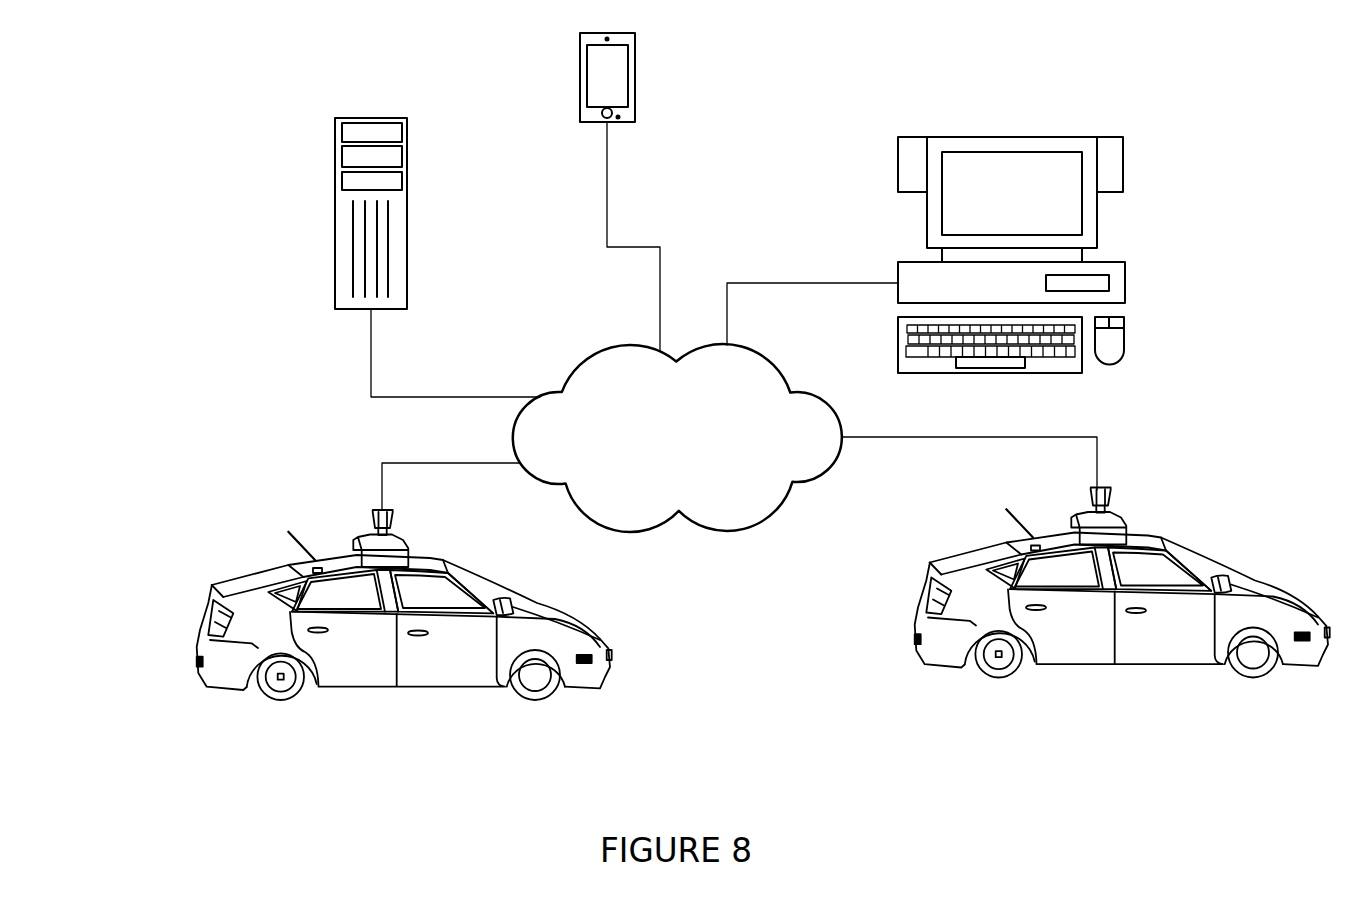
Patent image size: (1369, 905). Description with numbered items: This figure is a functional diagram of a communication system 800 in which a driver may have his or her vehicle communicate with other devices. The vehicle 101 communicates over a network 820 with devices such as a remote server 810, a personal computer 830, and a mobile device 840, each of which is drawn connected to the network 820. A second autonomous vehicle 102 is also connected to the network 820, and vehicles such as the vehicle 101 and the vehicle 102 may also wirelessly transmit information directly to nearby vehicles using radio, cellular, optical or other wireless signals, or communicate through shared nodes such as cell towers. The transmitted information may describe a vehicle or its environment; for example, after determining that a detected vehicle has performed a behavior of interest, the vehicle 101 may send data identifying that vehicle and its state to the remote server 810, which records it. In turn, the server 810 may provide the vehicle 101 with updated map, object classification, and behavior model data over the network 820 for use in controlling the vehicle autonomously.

The communication system 800 is at (392, 48).
The remote server 810 is at (335, 128).
The network 820 is at (628, 345).
The personal computer 830 is at (927, 218).
The mobile device 840 is at (580, 73).
The vehicle 101 is at (928, 570).
The vehicle 102 is at (212, 588).